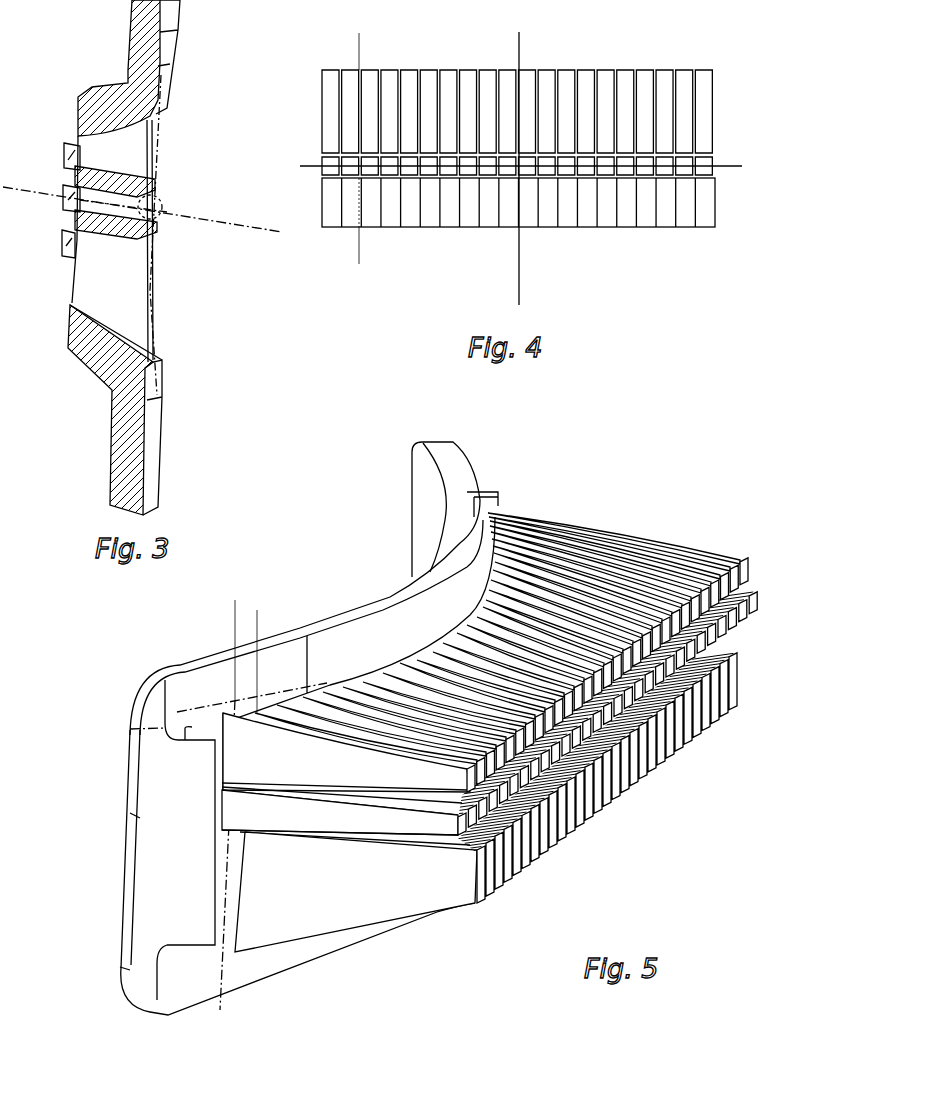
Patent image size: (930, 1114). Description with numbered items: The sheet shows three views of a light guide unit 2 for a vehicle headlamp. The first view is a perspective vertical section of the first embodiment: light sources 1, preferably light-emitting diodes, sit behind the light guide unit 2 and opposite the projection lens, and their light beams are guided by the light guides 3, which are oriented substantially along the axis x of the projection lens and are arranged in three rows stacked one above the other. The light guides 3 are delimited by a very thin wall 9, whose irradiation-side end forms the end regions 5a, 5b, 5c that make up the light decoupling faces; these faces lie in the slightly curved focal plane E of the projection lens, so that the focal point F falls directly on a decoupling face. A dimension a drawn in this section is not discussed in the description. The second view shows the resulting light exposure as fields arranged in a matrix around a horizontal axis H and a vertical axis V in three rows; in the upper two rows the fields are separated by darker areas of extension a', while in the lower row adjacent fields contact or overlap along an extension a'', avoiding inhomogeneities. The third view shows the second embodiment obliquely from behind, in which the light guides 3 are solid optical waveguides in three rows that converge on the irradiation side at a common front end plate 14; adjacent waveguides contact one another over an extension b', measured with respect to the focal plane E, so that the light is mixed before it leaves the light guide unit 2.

In FIG. 3, the light sources 1 is at (62, 248).
In FIG. 3, the light guide unit 2 is at (202, 36).
In FIG. 5, the light guide unit 2 is at (328, 568).
In FIG. 3, the light guides 3 is at (123, 302).
In FIG. 5, the light guides 3 is at (443, 893).
In FIG. 3, the irradiation-side end region 5a is at (168, 126).
In FIG. 3, the irradiation-side end region 5b is at (166, 193).
In FIG. 3, the irradiation-side end region 5c is at (163, 291).
In FIG. 3, the wall 9 is at (157, 232).
In FIG. 5, the front end plate 14 is at (455, 474).
In FIG. 3, the focal plane E is at (160, 93).
In FIG. 3, the focal point F is at (152, 214).
In FIG. 3, the gap a is at (190, 162).
In FIG. 4, the extension a' is at (361, 45).
In FIG. 4, the extension a'' is at (364, 221).
In FIG. 5, the extension b' is at (248, 651).
In FIG. 3, the axis x is at (248, 229).
In FIG. 4, the horizontal axis H is at (518, 167).
In FIG. 4, the vertical axis V is at (527, 169).